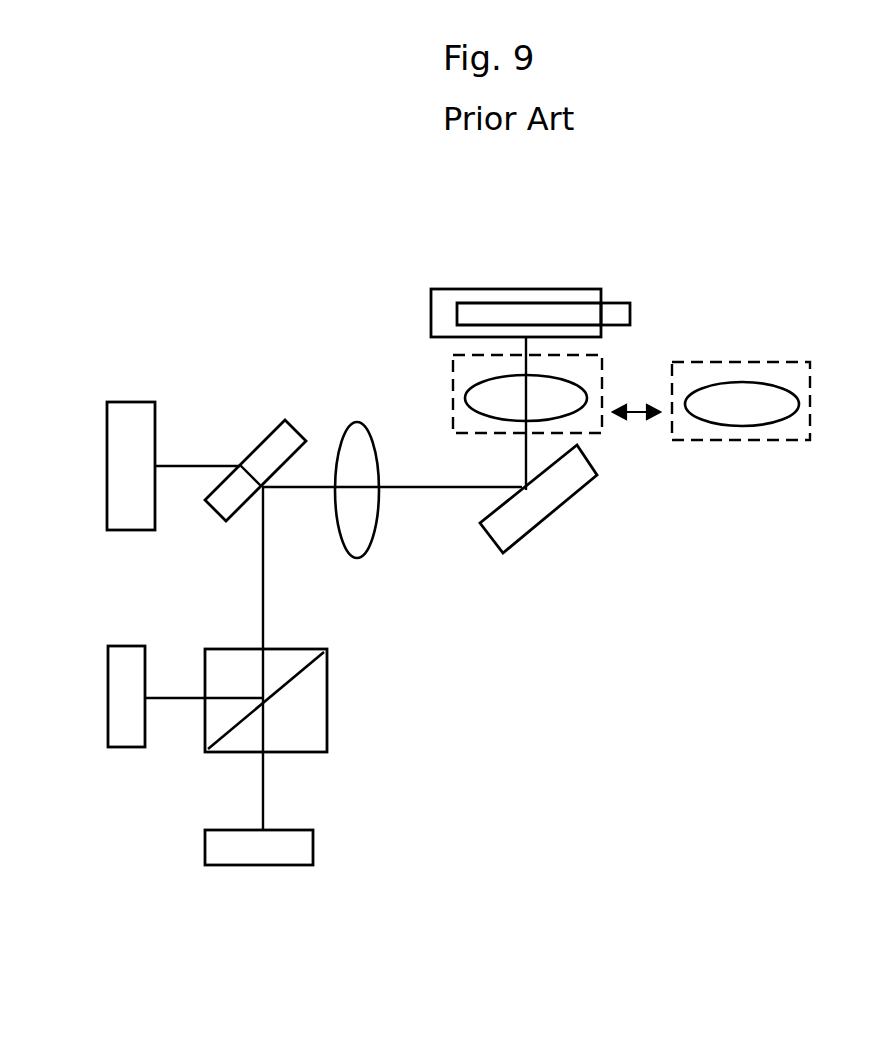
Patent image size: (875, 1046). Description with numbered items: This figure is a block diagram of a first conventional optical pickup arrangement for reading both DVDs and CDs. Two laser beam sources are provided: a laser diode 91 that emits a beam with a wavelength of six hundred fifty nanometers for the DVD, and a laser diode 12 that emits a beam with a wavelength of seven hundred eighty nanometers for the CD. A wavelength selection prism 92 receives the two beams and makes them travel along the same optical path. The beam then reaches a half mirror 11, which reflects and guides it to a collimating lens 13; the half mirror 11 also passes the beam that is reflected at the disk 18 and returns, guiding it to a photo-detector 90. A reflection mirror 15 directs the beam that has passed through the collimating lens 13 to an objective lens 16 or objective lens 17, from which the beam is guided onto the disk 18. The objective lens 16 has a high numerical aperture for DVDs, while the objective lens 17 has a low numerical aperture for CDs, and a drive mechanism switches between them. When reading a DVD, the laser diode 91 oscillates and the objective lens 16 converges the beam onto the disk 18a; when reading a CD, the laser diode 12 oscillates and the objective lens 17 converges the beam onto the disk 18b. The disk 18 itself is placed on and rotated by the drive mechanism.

The half mirror 11 is at (268, 437).
The laser beam source 12 is at (287, 853).
The collimating lens 13 is at (354, 437).
The reflection mirror 15 is at (558, 512).
The objective lens 16 is at (481, 407).
The objective lens 17 is at (772, 373).
The disk 18 is at (497, 288).
The disk (DVD) 18a is at (620, 318).
The disk (CD) 18b is at (572, 290).
The photo-detector 90 is at (130, 417).
The laser beam source 91 is at (123, 665).
The wavelength selection prism 92 is at (327, 720).